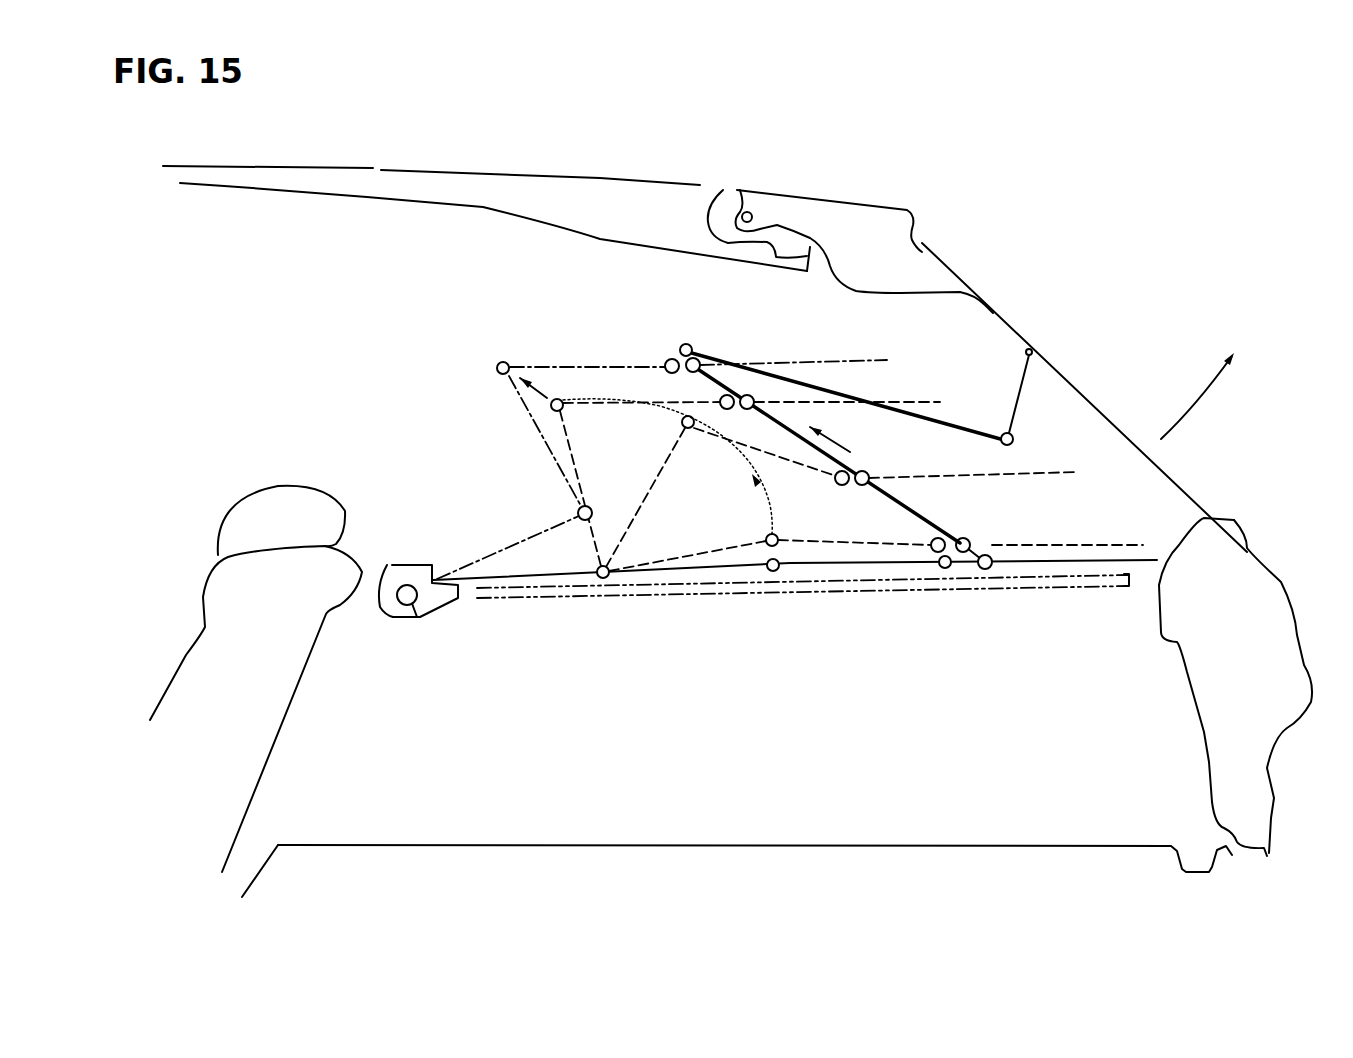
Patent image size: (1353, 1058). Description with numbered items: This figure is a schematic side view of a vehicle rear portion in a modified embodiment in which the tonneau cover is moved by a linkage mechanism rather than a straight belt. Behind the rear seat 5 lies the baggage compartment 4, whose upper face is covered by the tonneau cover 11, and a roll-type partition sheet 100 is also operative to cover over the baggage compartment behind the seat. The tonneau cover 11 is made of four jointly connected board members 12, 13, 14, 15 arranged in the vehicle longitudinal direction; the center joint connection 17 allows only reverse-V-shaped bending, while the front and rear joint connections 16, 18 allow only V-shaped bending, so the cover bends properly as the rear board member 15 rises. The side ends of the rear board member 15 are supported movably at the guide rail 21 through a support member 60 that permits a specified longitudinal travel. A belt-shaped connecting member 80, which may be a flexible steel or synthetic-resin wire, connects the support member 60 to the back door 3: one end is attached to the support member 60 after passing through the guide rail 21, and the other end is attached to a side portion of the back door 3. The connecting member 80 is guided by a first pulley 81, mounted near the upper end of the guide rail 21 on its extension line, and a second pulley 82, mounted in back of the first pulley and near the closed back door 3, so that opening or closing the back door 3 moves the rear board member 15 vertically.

The back door 3 is at (1215, 537).
The baggage compartment 4 is at (666, 740).
The rear seat 5 is at (186, 655).
The tonneau cover 11 is at (863, 357).
The board member 12 is at (527, 540).
The board member 13 is at (527, 407).
The board member 14 is at (598, 366).
The rear board member 15 is at (817, 361).
The front joint connection 16 is at (580, 512).
The center joint connection 17 is at (501, 362).
The rear joint connection 18 is at (668, 358).
The guide rail 21 is at (907, 508).
The support member 60 is at (692, 372).
The connecting member 80 is at (1020, 390).
The first pulley 81 is at (684, 345).
The second pulley 82 is at (1011, 442).
The roll-type partition sheet 100 is at (897, 592).